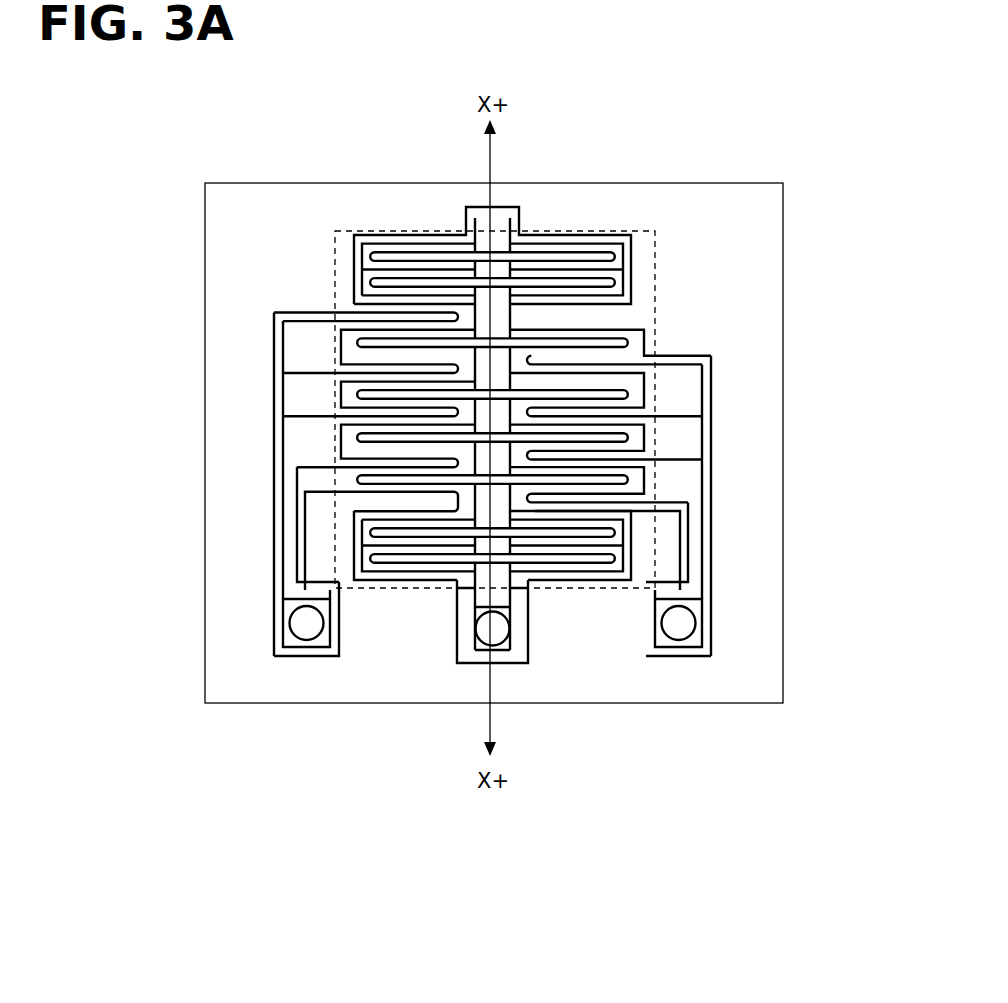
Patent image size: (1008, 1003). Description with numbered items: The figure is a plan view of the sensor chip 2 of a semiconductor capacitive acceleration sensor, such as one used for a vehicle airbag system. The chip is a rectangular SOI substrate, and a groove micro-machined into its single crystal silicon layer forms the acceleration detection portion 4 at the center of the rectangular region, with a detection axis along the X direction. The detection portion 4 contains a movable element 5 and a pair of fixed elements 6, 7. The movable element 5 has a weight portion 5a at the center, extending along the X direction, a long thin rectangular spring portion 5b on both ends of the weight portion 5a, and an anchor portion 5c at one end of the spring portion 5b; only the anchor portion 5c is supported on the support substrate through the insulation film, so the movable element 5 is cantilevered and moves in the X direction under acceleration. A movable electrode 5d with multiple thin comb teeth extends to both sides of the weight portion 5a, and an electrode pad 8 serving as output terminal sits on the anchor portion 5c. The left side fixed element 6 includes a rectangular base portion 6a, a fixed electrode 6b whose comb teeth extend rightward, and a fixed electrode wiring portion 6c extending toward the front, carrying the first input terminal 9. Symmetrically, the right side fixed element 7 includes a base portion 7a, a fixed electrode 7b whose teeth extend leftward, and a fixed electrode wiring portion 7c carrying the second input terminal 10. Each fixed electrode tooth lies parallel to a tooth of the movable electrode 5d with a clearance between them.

The sensor chip 2 is at (662, 168).
The acceleration detection portion 4 is at (656, 300).
The movable element 5 is at (488, 444).
The weight portion 5a is at (470, 504).
The spring portion 5b is at (363, 252).
The anchor portion 5c is at (490, 652).
The movable electrode 5d is at (373, 347).
The left side fixed element 6 is at (319, 485).
The base portion 6a is at (293, 440).
The fixed electrode 6b is at (412, 378).
The fixed electrode wiring portion 6c is at (297, 570).
The right side fixed element 7 is at (666, 493).
The base portion 7a is at (695, 430).
The fixed electrode 7b is at (590, 462).
The fixed electrode wiring portion 7c is at (695, 565).
The electrode pad 8 is at (500, 632).
The first input terminal 9 is at (305, 632).
The second input terminal 10 is at (680, 632).